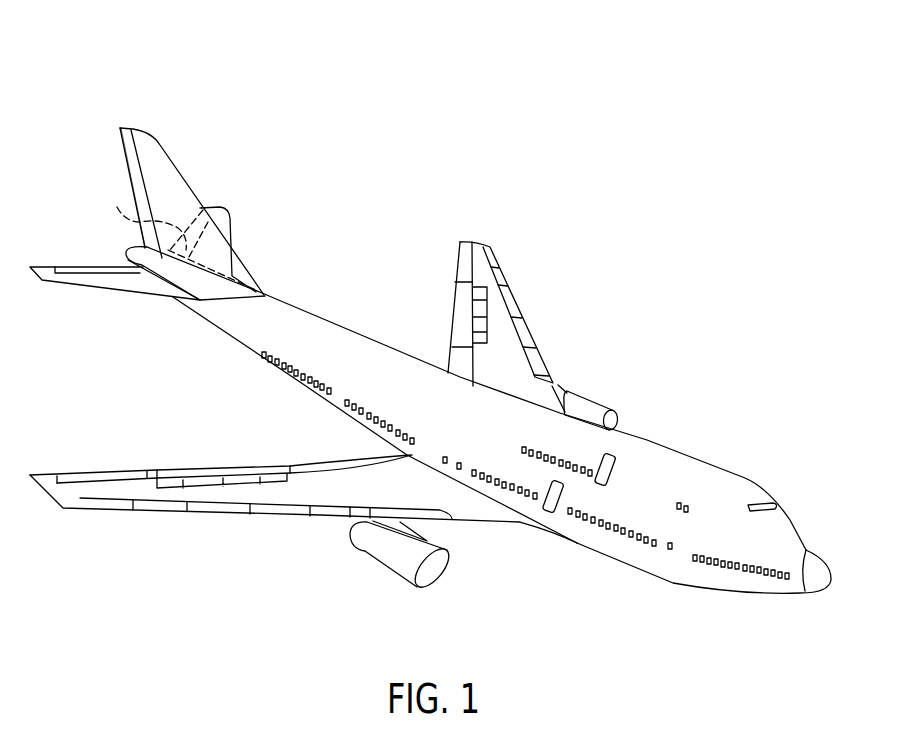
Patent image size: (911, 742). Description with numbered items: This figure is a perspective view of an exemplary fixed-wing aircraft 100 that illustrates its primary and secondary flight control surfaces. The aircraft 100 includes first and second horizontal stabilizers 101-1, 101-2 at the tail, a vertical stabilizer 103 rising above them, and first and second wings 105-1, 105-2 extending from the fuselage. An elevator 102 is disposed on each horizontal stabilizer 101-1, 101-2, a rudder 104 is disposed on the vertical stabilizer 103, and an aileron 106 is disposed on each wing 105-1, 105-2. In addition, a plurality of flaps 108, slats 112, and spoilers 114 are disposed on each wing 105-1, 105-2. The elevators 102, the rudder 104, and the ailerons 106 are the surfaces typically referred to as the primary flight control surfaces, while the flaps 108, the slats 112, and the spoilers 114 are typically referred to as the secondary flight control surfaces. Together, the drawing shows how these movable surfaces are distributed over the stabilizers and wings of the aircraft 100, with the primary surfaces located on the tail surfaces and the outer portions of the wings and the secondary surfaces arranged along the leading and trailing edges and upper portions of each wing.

The aircraft 100 is at (587, 149).
The first horizontal stabilizer 101-1 is at (100, 290).
The second horizontal stabilizer 101-2 is at (231, 225).
The elevator 102 is at (75, 268).
The vertical stabilizer 103 is at (181, 170).
The rudder 104 is at (127, 147).
The first wing 105-1 is at (473, 502).
The second wing 105-2 is at (556, 390).
The aileron 106 is at (462, 260).
The flaps 108 is at (457, 363).
The slats 112 is at (528, 334).
The spoilers 114 is at (478, 312).